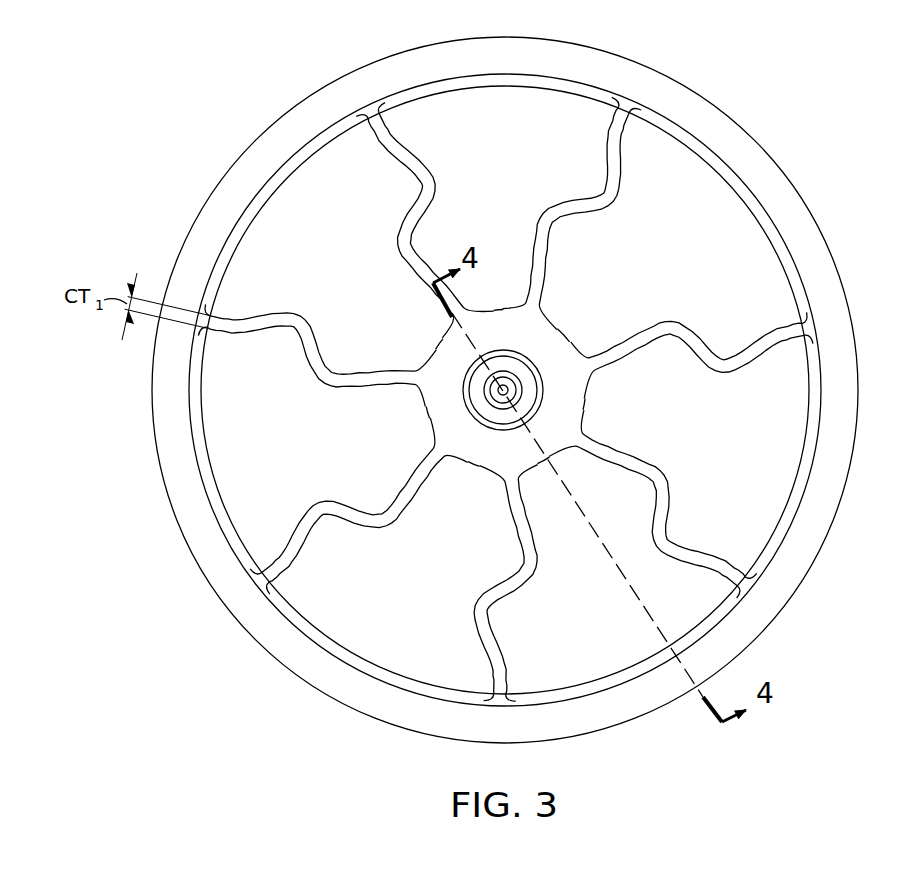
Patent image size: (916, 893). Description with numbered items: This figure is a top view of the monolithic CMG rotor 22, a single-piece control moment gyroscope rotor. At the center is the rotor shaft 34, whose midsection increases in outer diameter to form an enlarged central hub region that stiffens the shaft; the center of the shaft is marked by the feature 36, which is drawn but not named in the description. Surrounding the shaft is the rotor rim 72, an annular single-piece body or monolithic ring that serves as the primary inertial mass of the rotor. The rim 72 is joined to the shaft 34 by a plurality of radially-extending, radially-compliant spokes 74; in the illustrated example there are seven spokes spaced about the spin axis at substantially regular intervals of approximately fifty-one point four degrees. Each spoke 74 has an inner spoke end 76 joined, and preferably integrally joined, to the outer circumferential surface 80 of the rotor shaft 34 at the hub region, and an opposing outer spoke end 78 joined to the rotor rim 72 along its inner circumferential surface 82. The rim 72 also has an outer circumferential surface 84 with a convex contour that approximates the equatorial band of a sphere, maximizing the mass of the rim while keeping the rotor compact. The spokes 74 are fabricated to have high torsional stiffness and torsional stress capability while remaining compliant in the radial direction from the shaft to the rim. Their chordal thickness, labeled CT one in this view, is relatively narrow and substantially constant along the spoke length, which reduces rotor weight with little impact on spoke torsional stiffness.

The monolithic CMG rotor 22 is at (484, 390).
The rotor shaft 34 is at (552, 371).
The central bore 36 is at (480, 394).
The rotor rim 72 is at (491, 390).
The radially-compliant spokes 74 is at (504, 395).
The inner spoke end 76 is at (478, 312).
The outer spoke end 78 is at (386, 123).
The outer circumferential surface of rotor shaft 80 is at (268, 205).
The inner circumferential surface of rotor rim 82 is at (212, 466).
The outer circumferential surface of rotor rim 84 is at (160, 462).